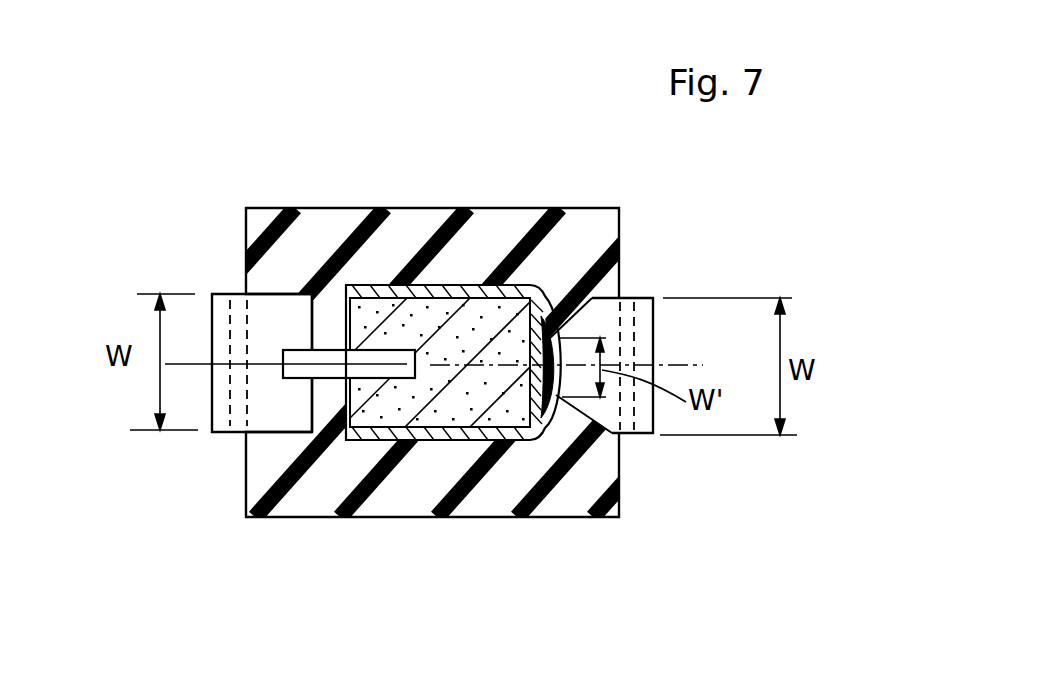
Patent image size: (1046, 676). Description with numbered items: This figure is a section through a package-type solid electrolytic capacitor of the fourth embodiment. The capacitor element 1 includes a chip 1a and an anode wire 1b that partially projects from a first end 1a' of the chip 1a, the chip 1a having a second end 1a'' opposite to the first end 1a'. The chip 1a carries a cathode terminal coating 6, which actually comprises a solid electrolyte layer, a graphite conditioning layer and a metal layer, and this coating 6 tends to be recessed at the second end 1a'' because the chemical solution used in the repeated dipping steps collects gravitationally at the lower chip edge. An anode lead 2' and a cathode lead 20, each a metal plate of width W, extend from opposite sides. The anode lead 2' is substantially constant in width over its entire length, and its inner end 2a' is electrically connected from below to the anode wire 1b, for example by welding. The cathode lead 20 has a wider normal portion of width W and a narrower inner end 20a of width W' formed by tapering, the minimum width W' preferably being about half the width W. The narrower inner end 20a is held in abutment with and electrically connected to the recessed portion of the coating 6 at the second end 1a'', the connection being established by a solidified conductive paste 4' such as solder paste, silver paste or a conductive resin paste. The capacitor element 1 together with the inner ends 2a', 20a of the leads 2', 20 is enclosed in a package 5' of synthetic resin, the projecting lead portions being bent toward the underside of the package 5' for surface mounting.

The capacitor element 1 is at (416, 354).
The chip 1a is at (440, 435).
The first end of the chip 1a' is at (307, 438).
The second end of the chip 1a'' is at (542, 443).
The anode wire 1b is at (293, 348).
The anode lead 2' is at (228, 389).
The inner end of the anode lead 2a' is at (231, 314).
The solidified conductive paste 4' is at (630, 456).
The package 5' is at (415, 320).
The cathode terminal coating 6 is at (473, 285).
The cathode lead 20 is at (645, 338).
The narrower inner end of the cathode lead 20a is at (576, 316).